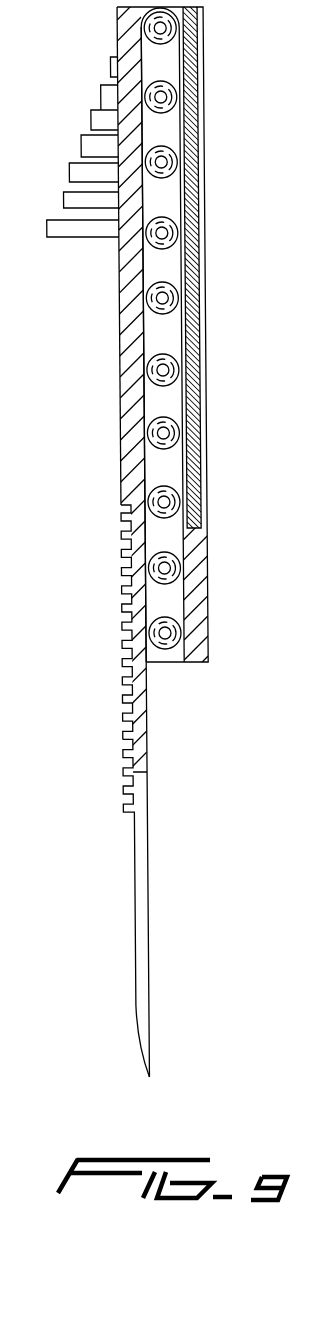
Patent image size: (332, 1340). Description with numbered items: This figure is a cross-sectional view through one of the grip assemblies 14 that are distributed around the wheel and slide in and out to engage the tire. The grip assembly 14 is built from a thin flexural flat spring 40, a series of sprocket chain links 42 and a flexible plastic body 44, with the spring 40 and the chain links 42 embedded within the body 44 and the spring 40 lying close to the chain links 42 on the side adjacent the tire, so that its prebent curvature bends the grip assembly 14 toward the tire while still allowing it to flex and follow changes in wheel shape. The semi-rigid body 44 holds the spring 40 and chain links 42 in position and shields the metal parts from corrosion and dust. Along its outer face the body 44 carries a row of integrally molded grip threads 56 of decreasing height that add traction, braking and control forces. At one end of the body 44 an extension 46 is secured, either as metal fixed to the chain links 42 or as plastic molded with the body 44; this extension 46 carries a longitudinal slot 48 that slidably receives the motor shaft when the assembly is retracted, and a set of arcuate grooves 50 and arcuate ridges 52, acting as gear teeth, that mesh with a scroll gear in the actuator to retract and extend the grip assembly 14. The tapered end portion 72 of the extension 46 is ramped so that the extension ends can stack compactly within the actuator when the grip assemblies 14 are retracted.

The grip assembly 14 is at (214, 389).
The flexural flat spring 40 is at (194, 264).
The sprocket chain links 42 is at (174, 31).
The flexible plastic body 44 is at (201, 615).
The extension 46 is at (147, 720).
The longitudinal slot 48 is at (141, 910).
The arcuate grooves 50 is at (122, 772).
The arcuate ridges 52 is at (122, 703).
The grip threads 56 is at (79, 155).
The end portion 72 is at (140, 1038).